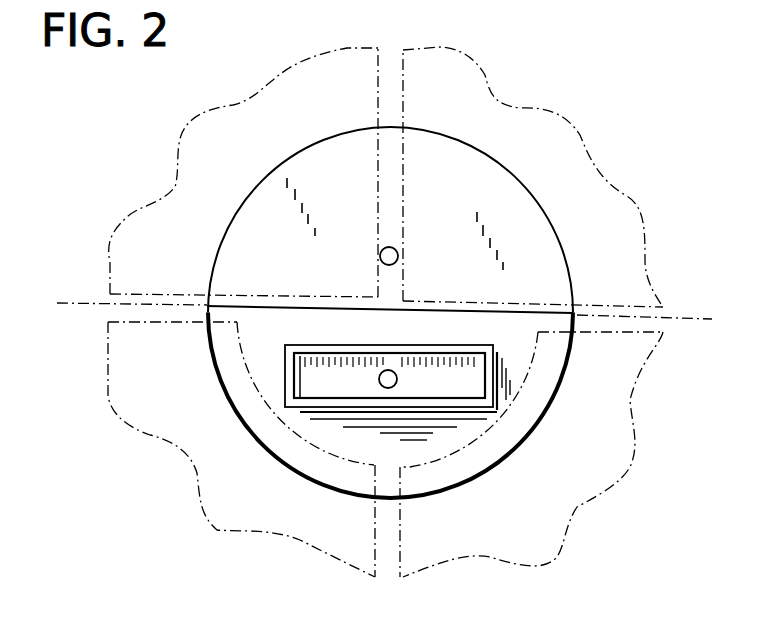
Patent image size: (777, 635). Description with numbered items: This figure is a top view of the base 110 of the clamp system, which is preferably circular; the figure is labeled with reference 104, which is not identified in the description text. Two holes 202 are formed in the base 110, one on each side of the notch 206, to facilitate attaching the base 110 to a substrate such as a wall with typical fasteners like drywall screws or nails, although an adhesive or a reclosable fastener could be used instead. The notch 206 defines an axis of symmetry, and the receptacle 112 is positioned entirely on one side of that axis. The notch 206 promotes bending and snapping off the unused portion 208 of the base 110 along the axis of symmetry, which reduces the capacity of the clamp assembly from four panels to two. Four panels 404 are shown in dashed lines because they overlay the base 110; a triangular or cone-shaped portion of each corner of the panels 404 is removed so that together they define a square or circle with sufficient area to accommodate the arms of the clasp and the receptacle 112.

The cover 104 is at (297, 140).
The base 110 is at (563, 372).
The receptacle 112 is at (280, 390).
The holes 202 is at (399, 253).
The notch 206 is at (282, 308).
The unused portion 208 is at (533, 238).
The panels 404 is at (243, 161).